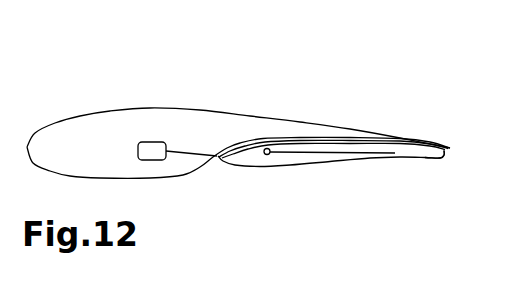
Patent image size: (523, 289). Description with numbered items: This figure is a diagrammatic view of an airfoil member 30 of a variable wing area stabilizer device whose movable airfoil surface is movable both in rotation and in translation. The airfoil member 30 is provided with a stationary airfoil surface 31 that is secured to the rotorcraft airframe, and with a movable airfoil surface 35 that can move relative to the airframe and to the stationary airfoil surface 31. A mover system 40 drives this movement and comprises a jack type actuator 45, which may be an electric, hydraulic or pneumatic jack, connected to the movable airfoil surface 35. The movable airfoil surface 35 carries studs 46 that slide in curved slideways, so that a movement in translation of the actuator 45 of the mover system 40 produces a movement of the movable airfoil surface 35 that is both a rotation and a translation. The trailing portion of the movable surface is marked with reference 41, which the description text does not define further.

The airfoil member 30 is at (369, 106).
The stationary airfoil surface 31 is at (248, 113).
The movable airfoil surface 35 is at (313, 163).
The mover system 40 is at (210, 175).
The flap trailing edge 41 is at (395, 152).
The actuator 45 is at (152, 148).
The studs 46 is at (292, 150).